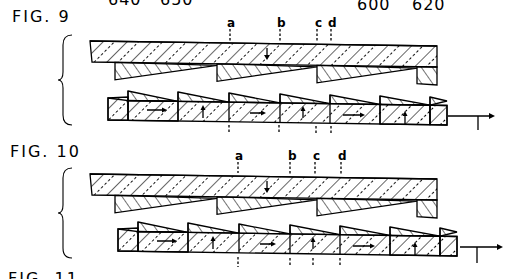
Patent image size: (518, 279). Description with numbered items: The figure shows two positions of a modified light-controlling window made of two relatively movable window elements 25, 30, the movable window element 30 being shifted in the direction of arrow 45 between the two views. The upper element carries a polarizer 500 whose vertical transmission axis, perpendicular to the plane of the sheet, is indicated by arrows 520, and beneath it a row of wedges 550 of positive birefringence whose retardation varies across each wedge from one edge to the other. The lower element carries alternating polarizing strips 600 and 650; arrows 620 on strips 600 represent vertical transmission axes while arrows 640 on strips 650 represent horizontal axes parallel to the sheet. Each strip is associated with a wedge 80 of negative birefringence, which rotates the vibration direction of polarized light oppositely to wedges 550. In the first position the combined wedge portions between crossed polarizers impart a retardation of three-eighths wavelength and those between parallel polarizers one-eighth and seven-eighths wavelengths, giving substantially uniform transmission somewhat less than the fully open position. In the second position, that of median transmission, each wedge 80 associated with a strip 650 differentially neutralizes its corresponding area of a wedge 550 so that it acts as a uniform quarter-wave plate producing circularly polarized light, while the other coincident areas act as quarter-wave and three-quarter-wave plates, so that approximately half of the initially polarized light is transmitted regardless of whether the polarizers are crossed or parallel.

In FIG. 9, the window element 25 is at (293, 52).
In FIG. 10, the window element 25 is at (293, 186).
In FIG. 9, the movable window element 30 is at (302, 110).
In FIG. 10, the movable window element 30 is at (307, 243).
In FIG. 9, the arrow 45 is at (471, 130).
In FIG. 10, the arrow 45 is at (481, 261).
In FIG. 9, the wedges 80 is at (232, 96).
In FIG. 10, the wedges 80 is at (243, 228).
In FIG. 9, the polarizer 500 is at (402, 49).
In FIG. 10, the polarizer 500 is at (423, 182).
In FIG. 9, the arrows 520 is at (262, 50).
In FIG. 10, the arrows 520 is at (262, 183).
In FIG. 9, the wedges 550 is at (217, 69).
In FIG. 10, the wedges 550 is at (217, 202).
In FIG. 9, the polarizing strips 600 is at (395, 122).
In FIG. 10, the polarizing strips 600 is at (400, 253).
In FIG. 9, the arrows 620 is at (411, 125).
In FIG. 10, the arrows 620 is at (420, 252).
In FIG. 9, the arrows 640 is at (148, 112).
In FIG. 10, the arrows 640 is at (155, 242).
In FIG. 9, the polarizing strips 650 is at (168, 110).
In FIG. 10, the polarizing strips 650 is at (185, 248).